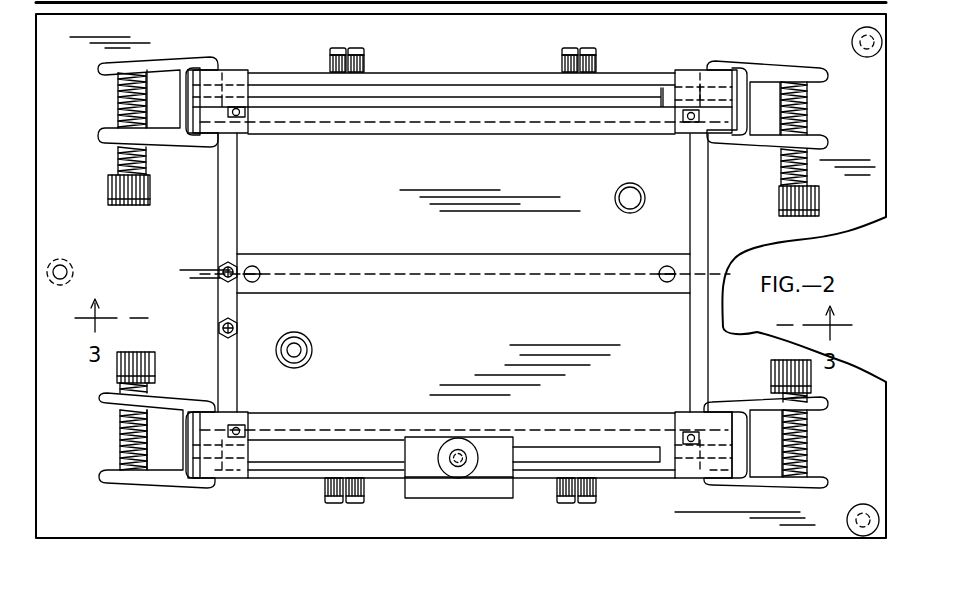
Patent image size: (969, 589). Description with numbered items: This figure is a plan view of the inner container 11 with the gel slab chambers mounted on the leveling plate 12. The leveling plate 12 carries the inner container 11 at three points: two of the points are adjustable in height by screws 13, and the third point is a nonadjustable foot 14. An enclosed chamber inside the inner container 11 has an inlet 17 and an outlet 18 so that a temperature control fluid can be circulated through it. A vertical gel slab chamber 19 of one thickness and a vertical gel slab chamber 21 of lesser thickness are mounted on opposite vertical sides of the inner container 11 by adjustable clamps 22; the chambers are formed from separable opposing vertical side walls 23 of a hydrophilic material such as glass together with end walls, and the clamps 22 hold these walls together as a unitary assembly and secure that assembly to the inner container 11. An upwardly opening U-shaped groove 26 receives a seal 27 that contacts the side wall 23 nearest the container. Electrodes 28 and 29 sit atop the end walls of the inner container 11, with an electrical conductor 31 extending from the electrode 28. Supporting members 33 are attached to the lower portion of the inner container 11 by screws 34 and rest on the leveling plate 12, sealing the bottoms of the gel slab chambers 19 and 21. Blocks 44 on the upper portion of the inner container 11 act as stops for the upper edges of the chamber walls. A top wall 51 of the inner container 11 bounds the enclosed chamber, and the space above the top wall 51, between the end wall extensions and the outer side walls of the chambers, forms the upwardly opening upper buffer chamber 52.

The inner container 11 is at (147, 233).
The leveling plate 12 is at (886, 418).
The screws 13 is at (870, 505).
The nonadjustable foot 14 is at (64, 262).
The inlet 17 is at (312, 342).
The outlet 18 is at (615, 180).
The vertical gel slab chamber 19 is at (380, 88).
The vertical gel slab chamber 21 is at (396, 447).
The adjustable clamps 22 is at (143, 62).
The vertical side walls 23 is at (428, 80).
The groove 26 is at (413, 124).
The seal 27 is at (236, 112).
The electrode 28 is at (220, 328).
The electrode 29 is at (220, 270).
The electrical conductor 31 is at (463, 280).
The supporting members 33 is at (630, 478).
The screws 34 is at (355, 48).
The blocks 44 is at (228, 72).
The top wall 51 is at (436, 235).
The upper buffer chamber 52 is at (607, 332).